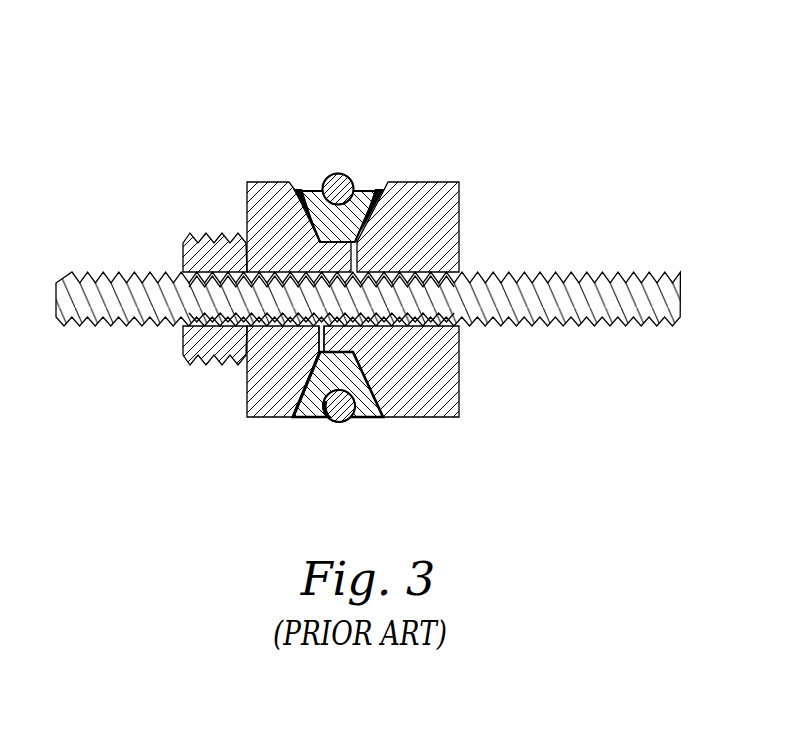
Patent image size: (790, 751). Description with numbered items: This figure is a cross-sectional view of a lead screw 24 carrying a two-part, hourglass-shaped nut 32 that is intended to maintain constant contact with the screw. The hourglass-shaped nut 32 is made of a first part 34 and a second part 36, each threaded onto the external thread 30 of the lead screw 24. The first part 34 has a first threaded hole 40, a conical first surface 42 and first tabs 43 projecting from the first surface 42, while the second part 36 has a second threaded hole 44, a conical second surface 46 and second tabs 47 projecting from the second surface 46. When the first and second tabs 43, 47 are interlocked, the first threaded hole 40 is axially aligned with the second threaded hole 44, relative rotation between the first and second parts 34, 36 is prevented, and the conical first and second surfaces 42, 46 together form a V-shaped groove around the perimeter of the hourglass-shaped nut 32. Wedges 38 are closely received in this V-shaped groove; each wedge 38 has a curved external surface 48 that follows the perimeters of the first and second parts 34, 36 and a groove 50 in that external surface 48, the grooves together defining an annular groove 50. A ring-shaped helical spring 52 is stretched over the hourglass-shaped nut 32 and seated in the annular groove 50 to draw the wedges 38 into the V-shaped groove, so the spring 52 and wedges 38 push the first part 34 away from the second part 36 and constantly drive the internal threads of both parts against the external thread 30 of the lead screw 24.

The lead screw 24 is at (640, 292).
The external thread 30 is at (519, 272).
The hourglass-shaped nut 32 is at (225, 74).
The first part 34 is at (261, 181).
The second part 36 is at (438, 181).
The wedge 38 is at (366, 186).
The first threaded hole 40 is at (184, 266).
The conical first surface 42 is at (302, 190).
The first tabs 43 is at (341, 259).
The second threaded hole 44 is at (460, 323).
The conical second surface 46 is at (377, 189).
The second tabs 47 is at (325, 347).
The curved external surface 48 is at (316, 178).
The groove 50 is at (330, 426).
The helical spring 52 is at (339, 173).